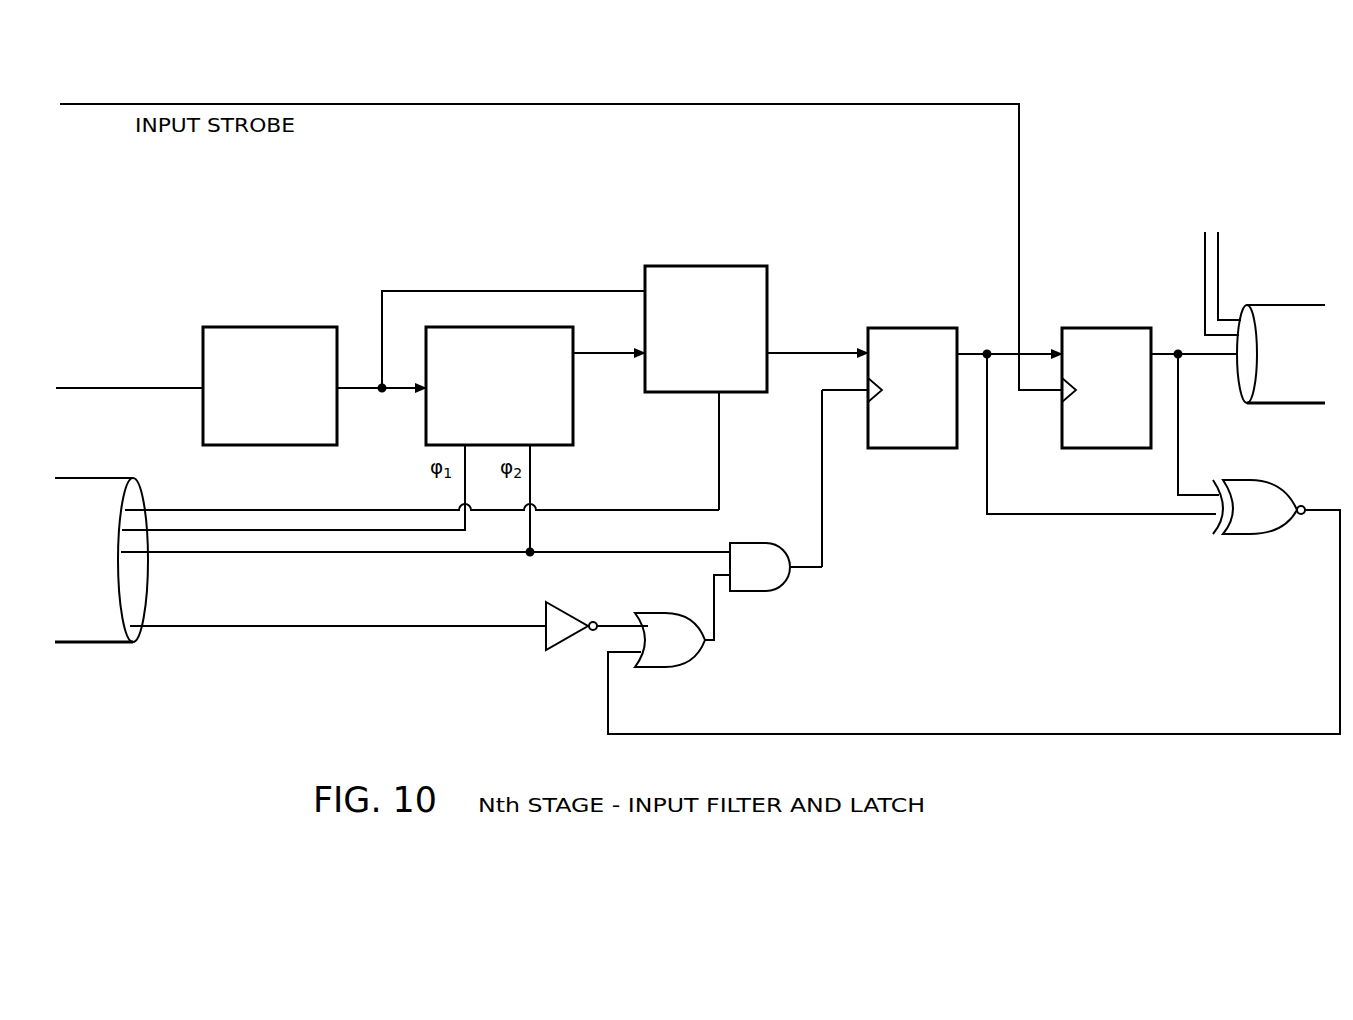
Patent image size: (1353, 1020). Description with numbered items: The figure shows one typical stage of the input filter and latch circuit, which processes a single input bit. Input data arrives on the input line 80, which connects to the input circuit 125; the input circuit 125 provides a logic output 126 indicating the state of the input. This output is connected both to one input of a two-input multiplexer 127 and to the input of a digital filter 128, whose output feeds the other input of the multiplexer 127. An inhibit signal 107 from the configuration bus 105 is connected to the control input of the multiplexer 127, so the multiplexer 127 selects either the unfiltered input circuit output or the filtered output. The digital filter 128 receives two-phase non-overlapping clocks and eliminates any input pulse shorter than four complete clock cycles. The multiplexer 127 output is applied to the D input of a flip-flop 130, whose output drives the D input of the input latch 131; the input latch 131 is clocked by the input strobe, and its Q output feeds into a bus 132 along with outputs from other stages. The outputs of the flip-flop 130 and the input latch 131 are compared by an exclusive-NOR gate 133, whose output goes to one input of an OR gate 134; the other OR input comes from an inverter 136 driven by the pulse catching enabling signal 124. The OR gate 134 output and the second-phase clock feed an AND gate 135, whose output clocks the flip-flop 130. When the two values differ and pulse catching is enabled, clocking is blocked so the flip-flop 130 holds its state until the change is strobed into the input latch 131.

The input line 80 is at (129, 374).
The configuration bus 105 is at (103, 644).
The inhibit signal 107 is at (185, 508).
The pulse catching enabling signal 124 is at (197, 629).
The input circuit 125 is at (275, 327).
The logic output 126 is at (488, 291).
The multiplexer 127 is at (712, 266).
The digital filter 128 is at (576, 420).
The flip-flop 130 is at (917, 328).
The input latch 131 is at (1110, 328).
The bus 132 is at (1280, 406).
The exclusive-NOR gate 133 is at (1272, 523).
The OR gate 134 is at (687, 654).
The AND gate 135 is at (777, 580).
The inverter 136 is at (560, 650).